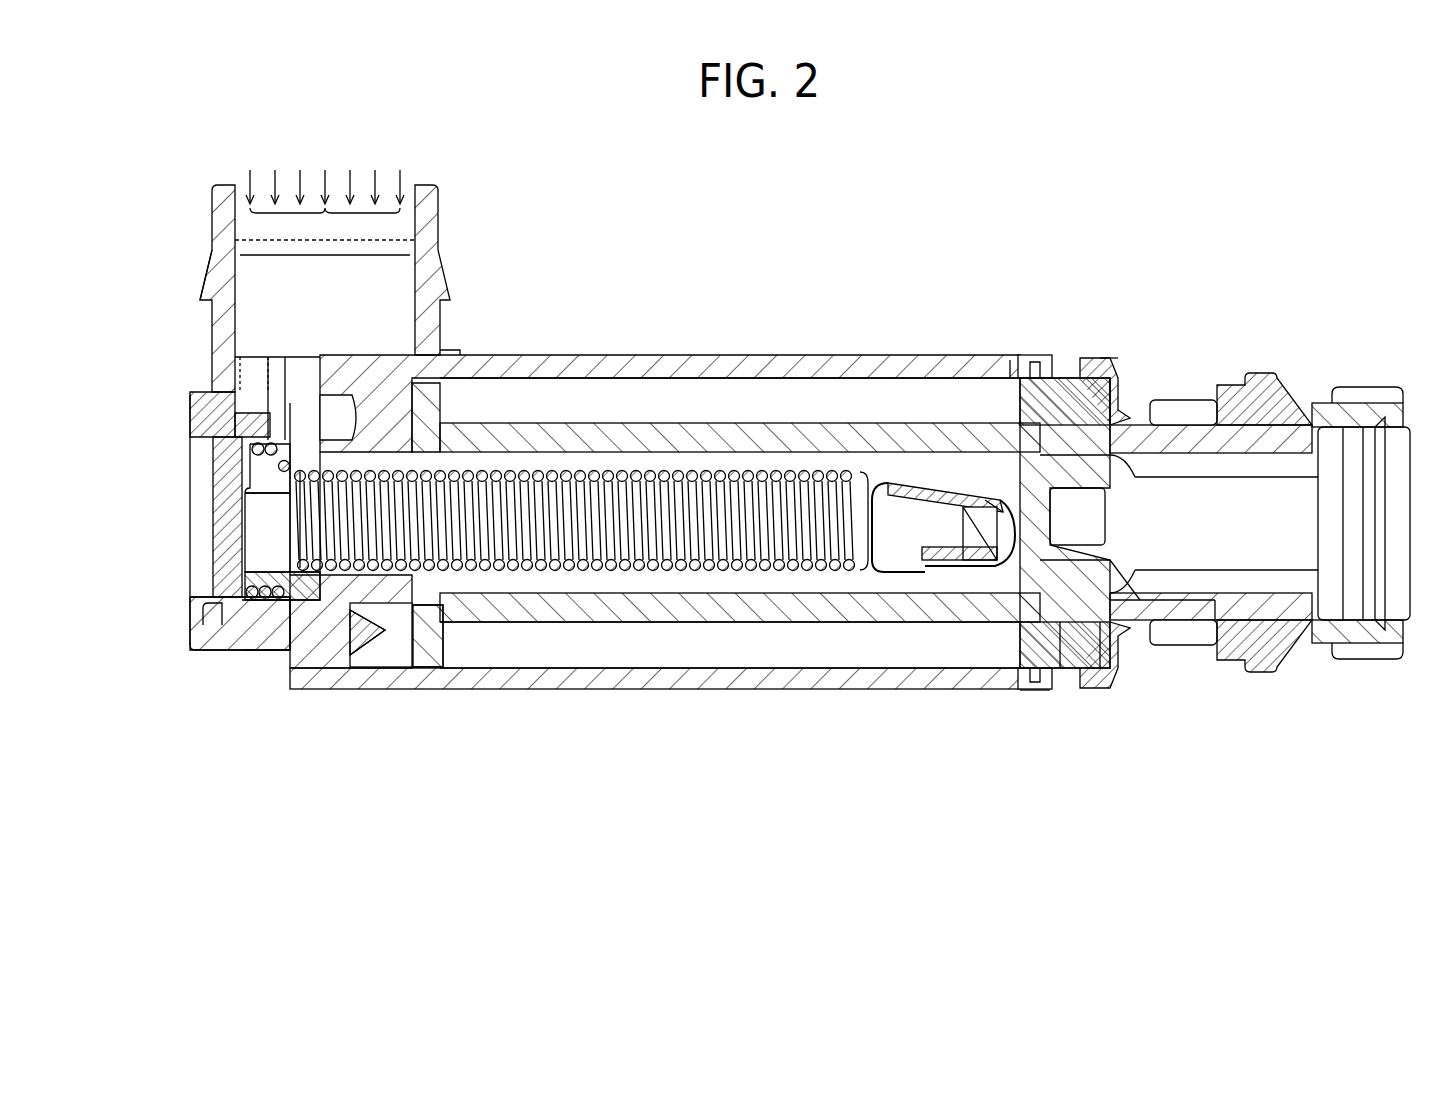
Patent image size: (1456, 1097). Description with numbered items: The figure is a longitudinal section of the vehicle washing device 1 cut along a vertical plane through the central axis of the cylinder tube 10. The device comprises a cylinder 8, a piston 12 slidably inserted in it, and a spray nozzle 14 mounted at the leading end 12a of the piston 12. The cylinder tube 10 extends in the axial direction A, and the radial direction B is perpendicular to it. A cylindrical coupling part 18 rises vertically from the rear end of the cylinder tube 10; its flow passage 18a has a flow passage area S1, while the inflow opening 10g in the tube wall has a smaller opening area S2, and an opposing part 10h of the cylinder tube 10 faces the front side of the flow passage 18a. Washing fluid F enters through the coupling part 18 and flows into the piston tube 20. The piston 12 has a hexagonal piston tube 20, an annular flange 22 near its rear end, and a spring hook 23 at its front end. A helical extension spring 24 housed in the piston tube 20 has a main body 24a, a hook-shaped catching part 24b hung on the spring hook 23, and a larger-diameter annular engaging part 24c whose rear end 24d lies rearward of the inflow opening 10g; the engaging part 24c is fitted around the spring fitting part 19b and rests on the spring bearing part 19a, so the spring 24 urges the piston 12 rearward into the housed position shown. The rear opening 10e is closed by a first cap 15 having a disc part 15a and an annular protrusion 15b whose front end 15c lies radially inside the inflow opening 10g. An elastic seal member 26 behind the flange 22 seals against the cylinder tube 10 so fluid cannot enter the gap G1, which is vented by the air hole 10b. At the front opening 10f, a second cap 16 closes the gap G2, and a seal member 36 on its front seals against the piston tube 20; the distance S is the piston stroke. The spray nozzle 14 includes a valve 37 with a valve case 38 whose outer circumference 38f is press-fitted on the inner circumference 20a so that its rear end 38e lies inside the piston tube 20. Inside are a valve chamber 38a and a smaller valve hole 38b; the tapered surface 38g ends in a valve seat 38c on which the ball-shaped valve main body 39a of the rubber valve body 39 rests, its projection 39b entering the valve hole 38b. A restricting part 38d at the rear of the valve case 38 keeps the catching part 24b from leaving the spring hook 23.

The vehicle washing device 1 is at (777, 907).
The cylinder 8 is at (708, 298).
The cylinder tube 10 is at (618, 353).
The air hole 10b is at (1036, 355).
The opening 10e is at (203, 612).
The opening 10f is at (1036, 692).
The inflow opening 10g is at (322, 357).
The opposing part 10h is at (447, 351).
The piston 12 is at (524, 625).
The leading end 12a is at (1214, 400).
The spray nozzle 14 is at (1327, 305).
The first cap 15 is at (192, 648).
The disc part 15a is at (213, 555).
The annular protrusion 15b is at (270, 622).
The front end 15c is at (207, 405).
The second cap 16 is at (1050, 378).
The coupling part 18 is at (447, 238).
The flow passage 18a is at (220, 248).
The spring bearing part 19a is at (280, 600).
The spring fitting part 19b is at (252, 455).
The piston tube 20 is at (757, 421).
The inner circumference 20a is at (1014, 358).
The flange 22 is at (430, 652).
The spring hook 23 is at (982, 480).
The spring 24 is at (817, 575).
The main body 24a is at (672, 575).
The catching part 24b is at (950, 482).
The annular engaging part 24c is at (240, 652).
The rear end 24d is at (245, 582).
The seal member 26 is at (387, 660).
The seal member 36 is at (1100, 370).
The valve 37 is at (1217, 360).
The valve case 38 is at (1294, 645).
The valve chamber 38a is at (1217, 622).
The valve hole 38b is at (1037, 695).
The valve seat 38c is at (1124, 405).
The restricting part 38d is at (947, 580).
The rear end 38e is at (1062, 575).
The outer circumference 38f is at (1102, 650).
The tapered surface 38g is at (1142, 610).
The valve body 39 is at (1252, 625).
The valve main body 39a is at (1212, 625).
The projection 39b is at (1064, 650).
The axial direction A is at (1327, 883).
The radial direction B is at (1385, 945).
The washing fluid F is at (240, 290).
The gap G1 is at (747, 655).
The gap G2 is at (1107, 356).
The distance S is at (440, 640).
The flow passage area S1 is at (300, 320).
The opening area S2 is at (328, 370).